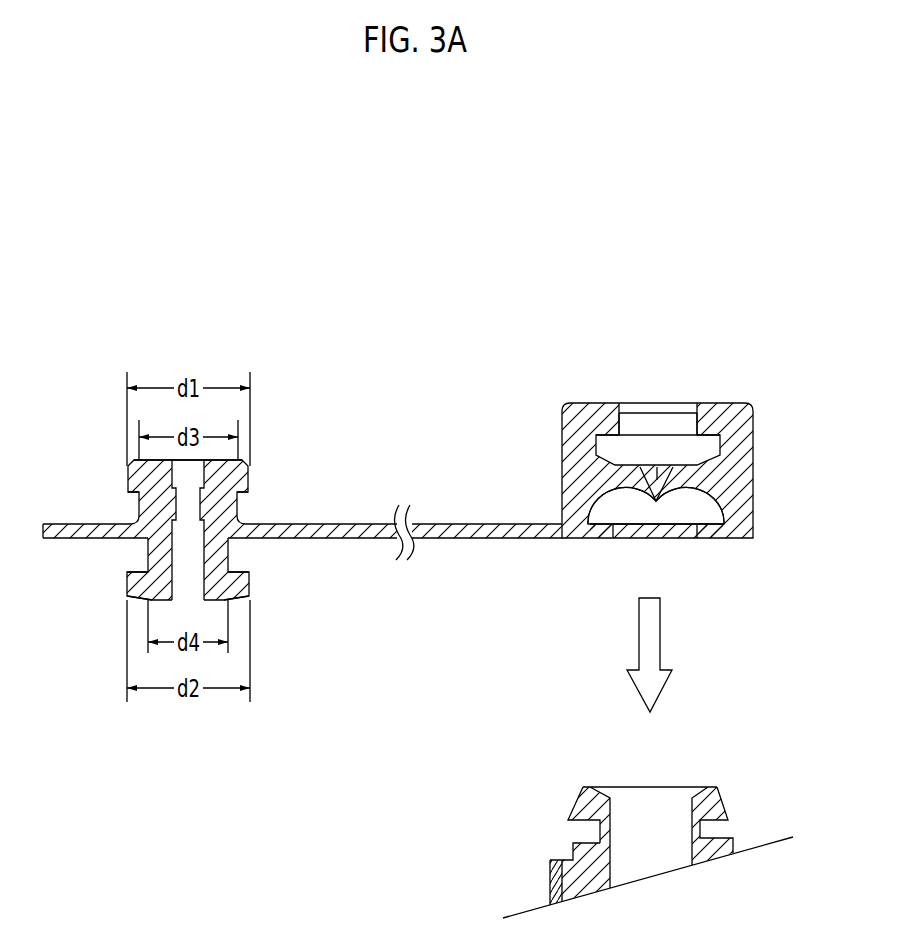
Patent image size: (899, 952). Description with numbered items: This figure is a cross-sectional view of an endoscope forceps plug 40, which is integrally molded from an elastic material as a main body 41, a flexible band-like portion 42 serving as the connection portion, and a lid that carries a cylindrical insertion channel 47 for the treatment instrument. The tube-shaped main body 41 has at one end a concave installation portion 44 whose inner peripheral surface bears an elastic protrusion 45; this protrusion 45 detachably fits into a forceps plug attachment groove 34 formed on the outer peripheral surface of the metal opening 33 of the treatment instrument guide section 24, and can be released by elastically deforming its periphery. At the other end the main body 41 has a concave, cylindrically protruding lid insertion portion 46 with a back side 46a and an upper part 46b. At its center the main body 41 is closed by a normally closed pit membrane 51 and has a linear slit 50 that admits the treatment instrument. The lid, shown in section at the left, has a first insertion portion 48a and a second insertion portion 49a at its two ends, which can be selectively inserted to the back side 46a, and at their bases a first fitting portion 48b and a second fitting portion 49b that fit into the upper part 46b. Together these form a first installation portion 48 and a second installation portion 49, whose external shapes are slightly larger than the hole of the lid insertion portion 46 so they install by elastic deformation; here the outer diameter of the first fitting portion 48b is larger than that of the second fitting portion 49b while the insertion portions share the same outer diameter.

The endoscope forceps plug 40 is at (687, 451).
The main body 41 is at (753, 463).
The band-like portion 42 is at (455, 528).
The installation portion 44 is at (615, 503).
The elastic protrusion 45 is at (715, 525).
The lid insertion portion 46 is at (708, 460).
The back side of the lid insertion portion 46a is at (705, 450).
The upper part of the lid insertion portion 46b is at (680, 422).
The insertion channel 47 is at (221, 498).
The first installation portion 48 is at (267, 451).
The first insertion portion 48a is at (247, 478).
The first fitting portion 48b is at (235, 515).
The second installation portion 49 is at (273, 576).
The second insertion portion 49a is at (240, 587).
The second fitting portion 49b is at (230, 567).
The linear slit 50 is at (655, 500).
The pit membrane 51 is at (667, 480).
The metal opening 33 is at (601, 808).
The forceps plug attachment groove 34 is at (600, 828).
The treatment instrument guide section 24 is at (536, 890).